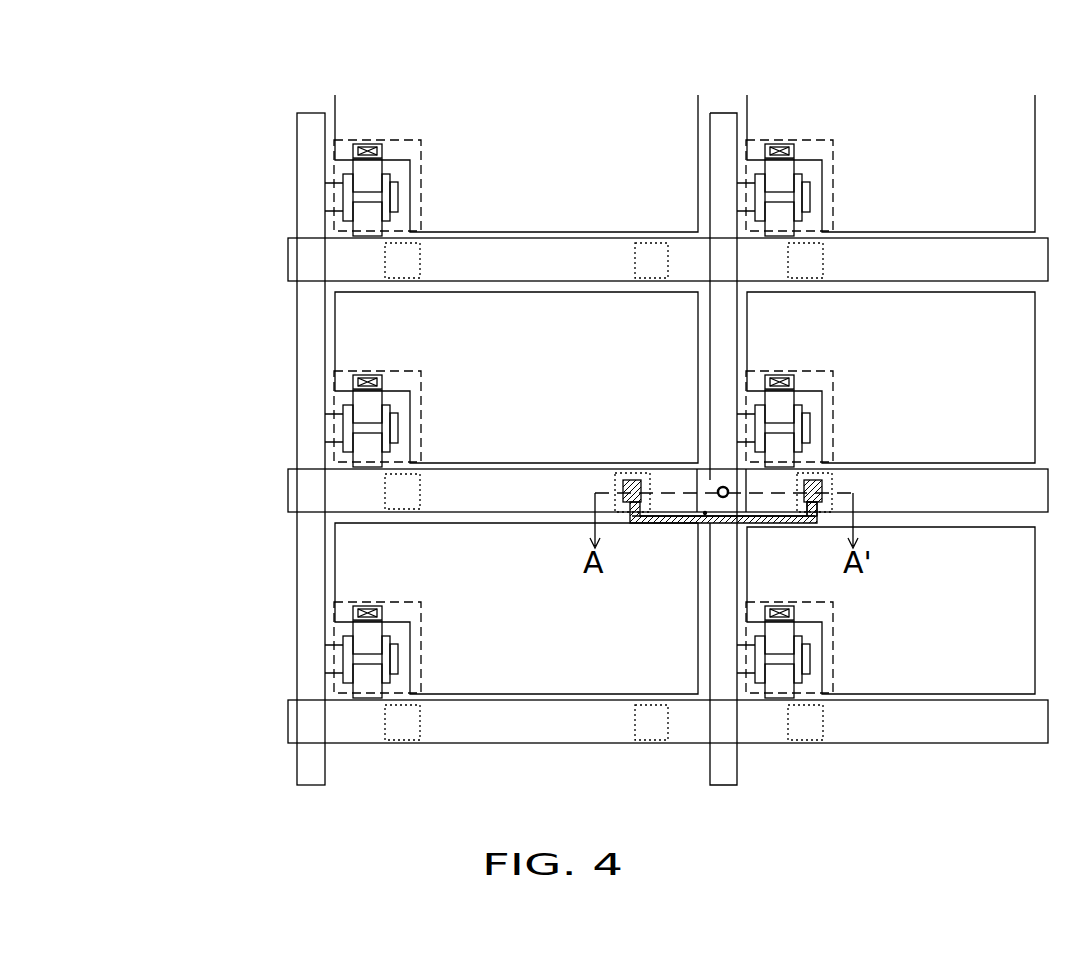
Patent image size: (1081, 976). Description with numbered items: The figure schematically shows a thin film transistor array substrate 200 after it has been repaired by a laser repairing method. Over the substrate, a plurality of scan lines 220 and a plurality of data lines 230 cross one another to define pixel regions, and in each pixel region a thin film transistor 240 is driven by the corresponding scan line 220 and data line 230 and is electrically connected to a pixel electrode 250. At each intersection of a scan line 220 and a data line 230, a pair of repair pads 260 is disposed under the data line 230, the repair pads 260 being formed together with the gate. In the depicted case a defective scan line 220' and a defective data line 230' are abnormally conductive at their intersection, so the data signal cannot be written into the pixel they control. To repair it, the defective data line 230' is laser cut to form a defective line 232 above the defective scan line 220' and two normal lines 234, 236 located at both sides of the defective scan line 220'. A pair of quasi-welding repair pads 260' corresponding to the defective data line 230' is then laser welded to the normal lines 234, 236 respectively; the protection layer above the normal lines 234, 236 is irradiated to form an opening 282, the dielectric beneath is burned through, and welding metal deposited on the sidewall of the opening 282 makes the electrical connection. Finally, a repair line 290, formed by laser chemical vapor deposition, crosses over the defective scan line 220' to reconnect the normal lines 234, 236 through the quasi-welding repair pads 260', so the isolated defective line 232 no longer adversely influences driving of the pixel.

The thin film transistor array substrate 200 is at (1030, 137).
The scan line 220 is at (314, 404).
The defective scan line 220' is at (736, 415).
The data line 230 is at (604, 490).
The defective data line 230' is at (604, 490).
The defective line 232 is at (707, 477).
The normal line 234 is at (675, 505).
The normal line 236 is at (766, 502).
The thin film transistor 240 is at (812, 140).
The pixel electrode 250 is at (559, 156).
The repair pad 260 is at (636, 447).
The quasi-welding repair pad 260' is at (742, 448).
The opening 282 is at (838, 488).
The repair line 290 is at (796, 527).